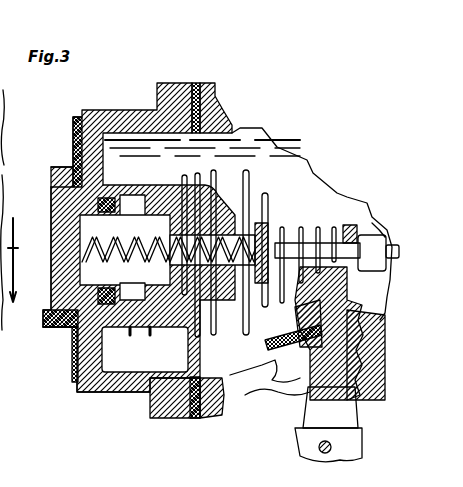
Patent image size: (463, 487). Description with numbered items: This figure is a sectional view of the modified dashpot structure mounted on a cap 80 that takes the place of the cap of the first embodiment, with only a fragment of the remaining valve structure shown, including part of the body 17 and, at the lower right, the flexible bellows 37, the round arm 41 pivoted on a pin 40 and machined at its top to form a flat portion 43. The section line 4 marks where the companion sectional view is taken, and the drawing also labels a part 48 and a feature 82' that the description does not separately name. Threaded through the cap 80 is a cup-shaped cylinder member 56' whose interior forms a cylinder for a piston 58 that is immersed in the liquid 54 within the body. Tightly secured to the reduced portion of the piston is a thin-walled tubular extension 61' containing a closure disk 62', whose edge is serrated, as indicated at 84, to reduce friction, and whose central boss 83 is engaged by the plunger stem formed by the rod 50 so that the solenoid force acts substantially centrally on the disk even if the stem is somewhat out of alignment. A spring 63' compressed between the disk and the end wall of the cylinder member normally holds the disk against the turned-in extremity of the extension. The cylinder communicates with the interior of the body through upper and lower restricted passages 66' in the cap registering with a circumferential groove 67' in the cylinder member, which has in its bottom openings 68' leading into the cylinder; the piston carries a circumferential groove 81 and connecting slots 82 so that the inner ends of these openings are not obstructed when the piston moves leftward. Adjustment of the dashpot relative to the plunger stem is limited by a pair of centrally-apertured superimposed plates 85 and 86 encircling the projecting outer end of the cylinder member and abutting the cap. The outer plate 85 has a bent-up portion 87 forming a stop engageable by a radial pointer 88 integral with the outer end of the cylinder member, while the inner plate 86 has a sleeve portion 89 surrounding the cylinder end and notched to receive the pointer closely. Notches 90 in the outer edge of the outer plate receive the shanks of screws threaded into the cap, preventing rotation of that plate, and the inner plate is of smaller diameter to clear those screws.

The section line 4— 4 is at (19, 260).
The body 17 is at (220, 420).
The flexible bellows 37 is at (275, 375).
The pin 40 is at (325, 452).
The round arm 41 is at (355, 410).
The flat portion 43 is at (384, 222).
The tube 48 is at (245, 170).
The rod 50 is at (335, 243).
The liquid 54 is at (275, 143).
The cup-shaped cylinder member 56' is at (36, 248).
The piston 58 is at (207, 264).
The tubular extension 61' is at (261, 252).
The closure disk 62' is at (280, 250).
The spring 63' is at (114, 218).
The restricted passages 66' is at (148, 345).
The circumferential groove 67' is at (145, 349).
The openings 68' is at (114, 284).
The cap 80 is at (100, 116).
The circumferential groove 81 is at (209, 235).
The connecting slots 82 is at (168, 260).
The spring 82' is at (125, 250).
The central boss 83 is at (290, 240).
The serrated edge 84 is at (298, 279).
The outer plate 85 is at (75, 358).
The inner plate 86 is at (75, 137).
The bent-up portion 87 is at (60, 340).
The pointer 88 is at (52, 172).
The sleeve portion 89 is at (50, 318).
The notches 90 is at (75, 385).